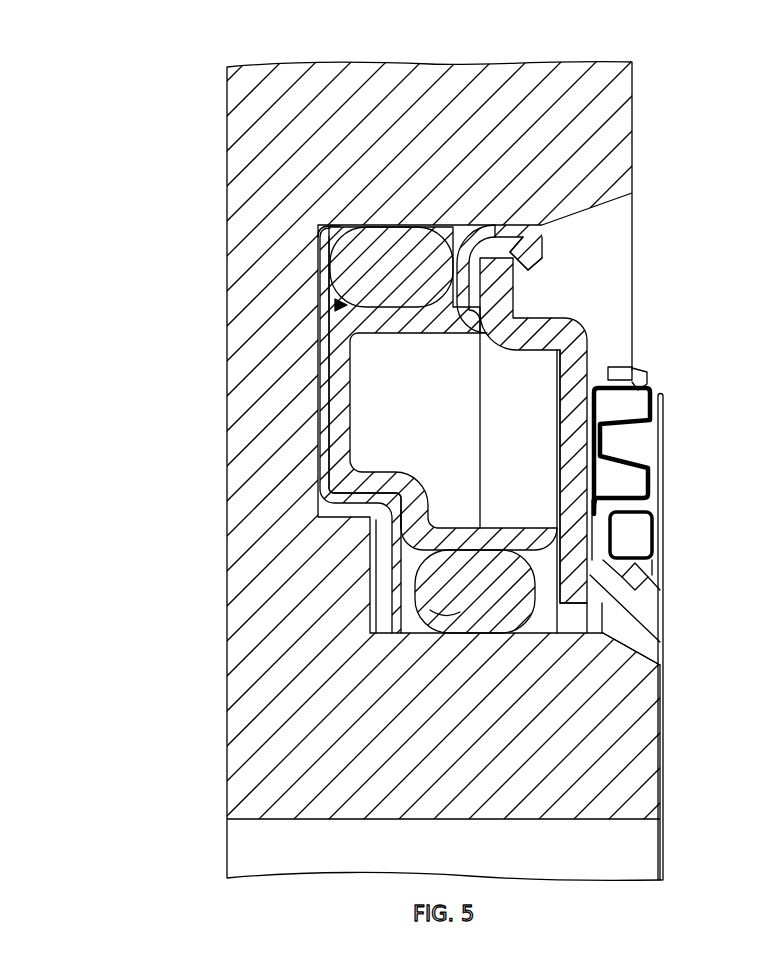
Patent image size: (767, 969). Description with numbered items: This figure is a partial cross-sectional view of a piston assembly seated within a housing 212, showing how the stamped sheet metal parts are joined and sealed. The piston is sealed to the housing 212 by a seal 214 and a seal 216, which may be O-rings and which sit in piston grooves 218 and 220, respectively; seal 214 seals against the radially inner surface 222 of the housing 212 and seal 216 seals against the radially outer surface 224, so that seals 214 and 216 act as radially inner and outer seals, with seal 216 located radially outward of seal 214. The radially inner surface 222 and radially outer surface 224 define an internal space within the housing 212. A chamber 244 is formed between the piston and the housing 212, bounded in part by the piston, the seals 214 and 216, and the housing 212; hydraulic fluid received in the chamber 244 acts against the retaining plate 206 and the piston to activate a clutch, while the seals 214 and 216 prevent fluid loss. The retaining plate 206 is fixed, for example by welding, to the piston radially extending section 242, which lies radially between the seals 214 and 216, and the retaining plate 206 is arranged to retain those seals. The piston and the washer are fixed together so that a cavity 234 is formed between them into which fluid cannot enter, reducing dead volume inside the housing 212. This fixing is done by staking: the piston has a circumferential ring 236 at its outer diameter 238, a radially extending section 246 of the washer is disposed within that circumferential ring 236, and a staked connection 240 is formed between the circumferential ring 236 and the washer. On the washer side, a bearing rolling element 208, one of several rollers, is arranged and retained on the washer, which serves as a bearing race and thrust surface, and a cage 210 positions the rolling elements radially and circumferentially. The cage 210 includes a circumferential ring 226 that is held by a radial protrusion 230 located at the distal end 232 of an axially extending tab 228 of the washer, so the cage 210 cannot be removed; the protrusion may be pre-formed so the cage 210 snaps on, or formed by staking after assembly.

The housing 212 is at (533, 72).
The retaining plate 206 is at (318, 263).
The bearing rolling element 208 is at (663, 430).
The cage 210 is at (648, 374).
The seal 214 is at (443, 613).
The seal 216 is at (335, 223).
The piston groove 218 is at (417, 550).
The piston groove 220 is at (340, 305).
The radially inner surface 222 is at (487, 633).
The radially outer surface 224 is at (397, 227).
The circumferential ring 226 is at (617, 560).
The tab 228 is at (640, 645).
The radial protrusion 230 is at (645, 582).
The distal end 232 is at (635, 603).
The cavity 234 is at (435, 412).
The circumferential ring 236 is at (490, 224).
The outer diameter 238 is at (455, 226).
The staked connection 240 is at (541, 245).
The piston radially extending section 242 is at (333, 447).
The chamber 244 is at (380, 607).
The radially extending section 246 is at (513, 298).